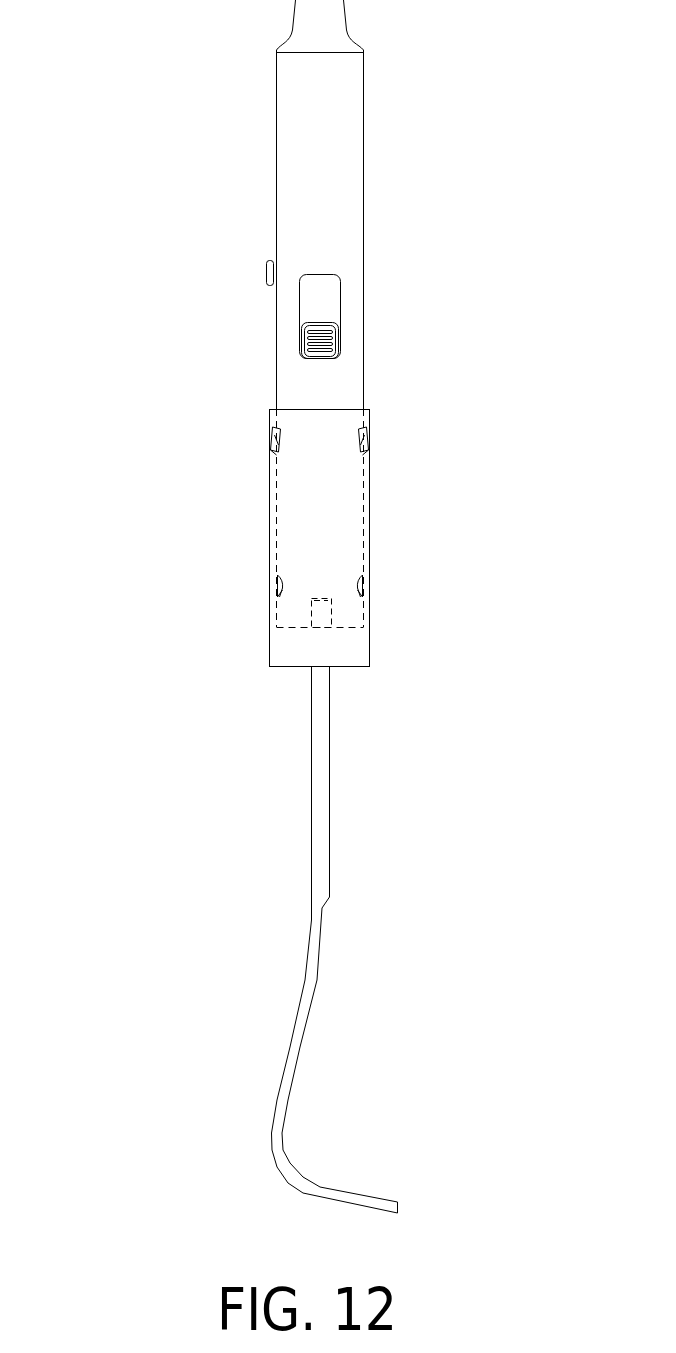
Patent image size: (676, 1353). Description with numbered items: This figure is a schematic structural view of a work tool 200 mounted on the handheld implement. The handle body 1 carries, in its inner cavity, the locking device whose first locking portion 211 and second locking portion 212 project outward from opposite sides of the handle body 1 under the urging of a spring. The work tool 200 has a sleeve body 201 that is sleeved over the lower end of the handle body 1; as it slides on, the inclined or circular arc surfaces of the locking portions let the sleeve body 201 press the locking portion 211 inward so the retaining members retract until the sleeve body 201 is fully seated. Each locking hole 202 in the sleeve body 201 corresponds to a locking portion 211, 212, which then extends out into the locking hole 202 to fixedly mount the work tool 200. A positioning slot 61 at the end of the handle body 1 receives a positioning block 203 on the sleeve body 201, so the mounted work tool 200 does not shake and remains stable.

The handle body 1 is at (276, 360).
The work tool 200 is at (329, 666).
The sleeve body 201 is at (269, 523).
The locking hole 202 is at (400, 475).
The positioning block 203 is at (322, 610).
The first locking portion 211 is at (270, 437).
The second locking portion 212 is at (367, 437).
The positioning slot 61 is at (312, 607).